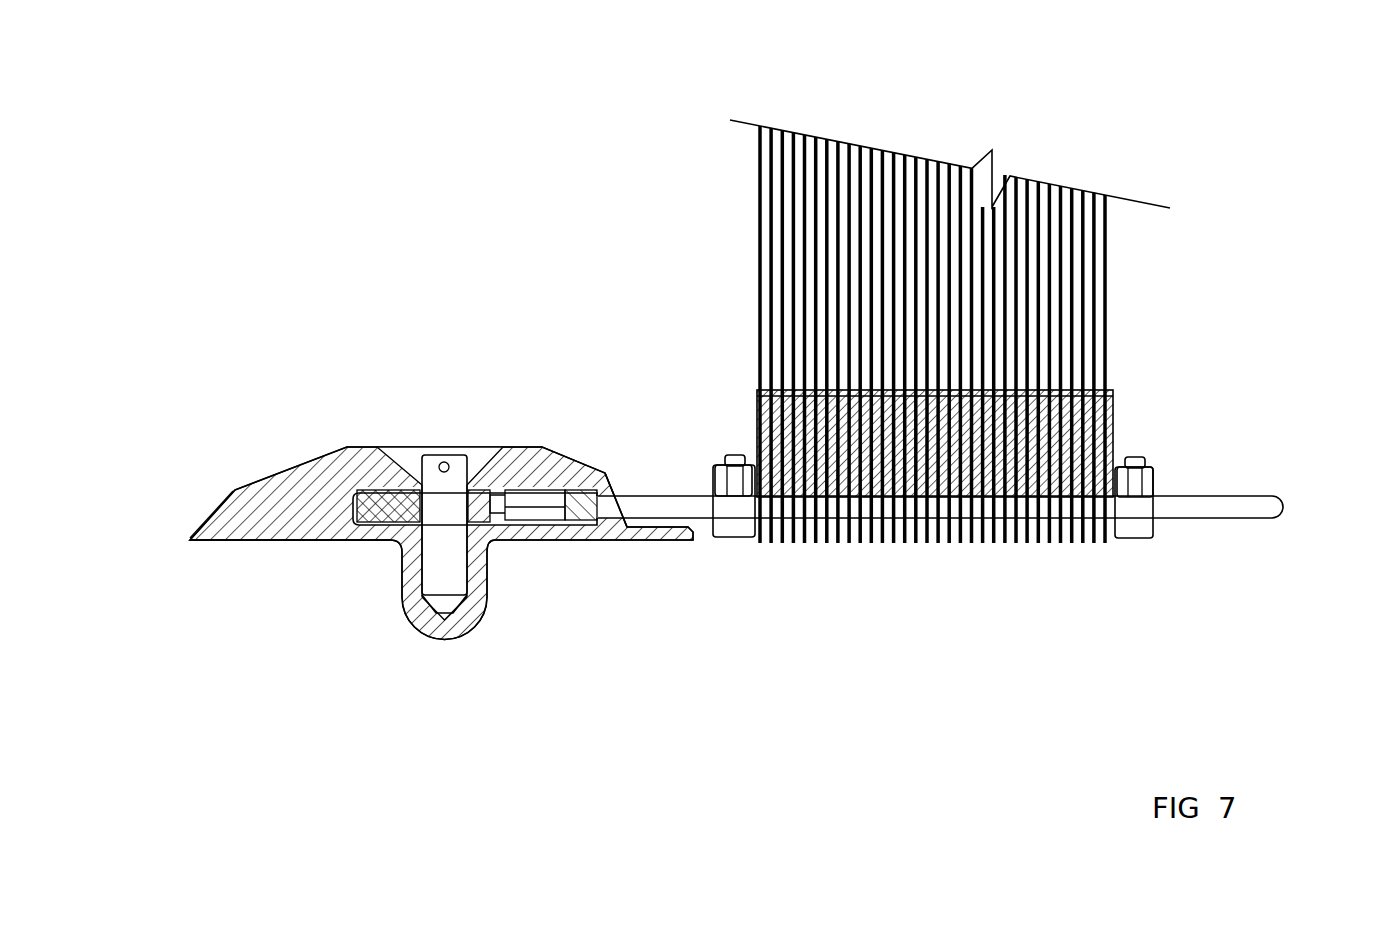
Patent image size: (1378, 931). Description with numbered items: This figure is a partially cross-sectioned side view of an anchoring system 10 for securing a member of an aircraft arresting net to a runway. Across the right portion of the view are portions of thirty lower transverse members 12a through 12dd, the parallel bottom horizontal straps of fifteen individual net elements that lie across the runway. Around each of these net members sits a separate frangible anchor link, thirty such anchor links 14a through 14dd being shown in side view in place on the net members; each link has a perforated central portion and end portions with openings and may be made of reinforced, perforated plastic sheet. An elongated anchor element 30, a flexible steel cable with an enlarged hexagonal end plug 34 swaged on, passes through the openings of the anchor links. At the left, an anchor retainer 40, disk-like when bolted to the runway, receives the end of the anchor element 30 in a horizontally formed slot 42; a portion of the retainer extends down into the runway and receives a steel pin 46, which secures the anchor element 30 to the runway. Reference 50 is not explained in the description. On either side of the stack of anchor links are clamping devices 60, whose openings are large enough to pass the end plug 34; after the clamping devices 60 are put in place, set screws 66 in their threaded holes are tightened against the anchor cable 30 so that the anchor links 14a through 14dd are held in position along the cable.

The anchoring system 10 is at (740, 768).
The lower transverse member 12a is at (765, 123).
The lower transverse member 12dd is at (1115, 193).
The anchor link 14a is at (755, 537).
The anchor link 14dd is at (1113, 538).
The anchor element 30 is at (1233, 496).
The end plug 34 is at (537, 507).
The anchor retainer 40 is at (265, 478).
The slot 42 is at (638, 482).
The steel pin 46 is at (467, 457).
The base bottom surface 50 is at (357, 540).
The clamping device 60 is at (713, 473).
The set screw 66 is at (725, 455).